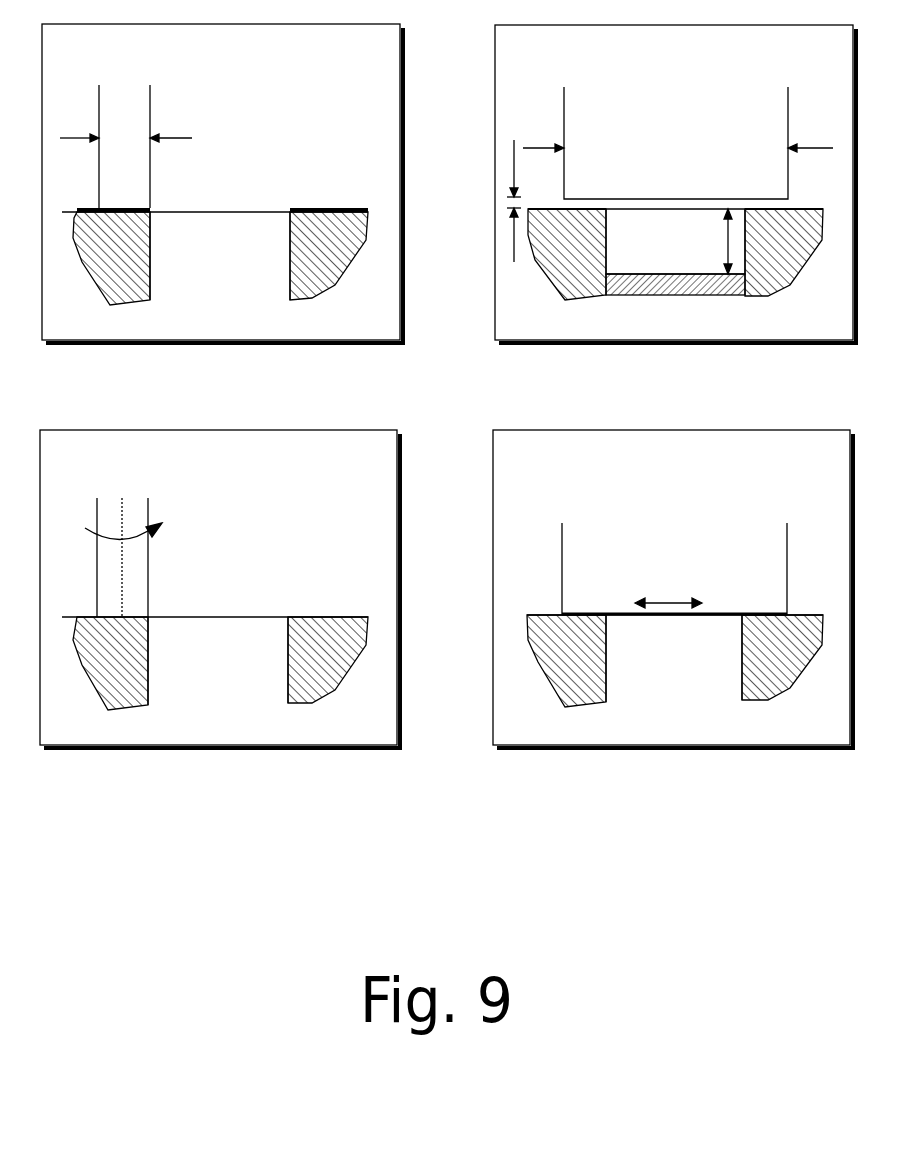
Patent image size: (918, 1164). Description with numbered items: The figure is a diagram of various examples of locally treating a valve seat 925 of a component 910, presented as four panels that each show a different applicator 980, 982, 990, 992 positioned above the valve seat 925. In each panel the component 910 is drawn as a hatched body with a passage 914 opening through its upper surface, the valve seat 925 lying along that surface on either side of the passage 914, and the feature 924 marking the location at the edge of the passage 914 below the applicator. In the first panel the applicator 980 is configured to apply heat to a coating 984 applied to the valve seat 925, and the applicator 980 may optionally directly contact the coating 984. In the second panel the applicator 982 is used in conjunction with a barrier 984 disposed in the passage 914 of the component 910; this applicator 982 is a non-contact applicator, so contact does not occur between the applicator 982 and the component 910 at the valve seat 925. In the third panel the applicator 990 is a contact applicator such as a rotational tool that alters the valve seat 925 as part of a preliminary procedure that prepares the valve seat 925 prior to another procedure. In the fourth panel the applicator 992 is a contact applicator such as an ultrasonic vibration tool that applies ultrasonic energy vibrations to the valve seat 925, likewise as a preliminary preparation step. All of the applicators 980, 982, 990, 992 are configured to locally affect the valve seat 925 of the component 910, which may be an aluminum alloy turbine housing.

The component 910 is at (365, 305).
The passage 914 is at (242, 281).
The trench / recess 924 is at (151, 213).
The valve seat 925 is at (311, 212).
The coating 984 is at (290, 210).
The applicator 980 is at (144, 73).
The applicator 982 is at (700, 75).
The applicator 990 is at (142, 486).
The applicator 992 is at (699, 510).